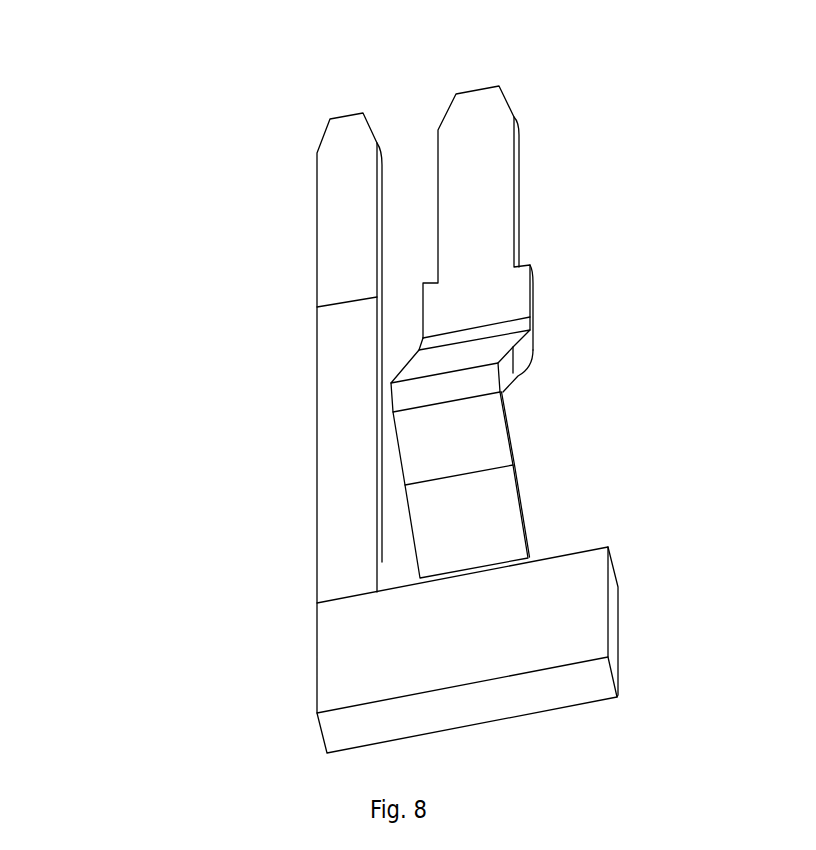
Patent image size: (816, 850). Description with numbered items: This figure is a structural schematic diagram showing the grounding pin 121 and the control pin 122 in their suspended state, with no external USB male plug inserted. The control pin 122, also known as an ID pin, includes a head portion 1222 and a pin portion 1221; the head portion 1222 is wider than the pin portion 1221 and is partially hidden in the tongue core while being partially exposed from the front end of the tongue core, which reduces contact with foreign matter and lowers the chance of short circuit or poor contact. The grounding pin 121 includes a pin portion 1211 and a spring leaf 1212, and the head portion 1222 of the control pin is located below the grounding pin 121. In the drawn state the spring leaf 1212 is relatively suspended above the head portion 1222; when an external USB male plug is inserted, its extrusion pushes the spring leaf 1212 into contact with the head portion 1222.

The grounding pin 121 is at (564, 328).
The pin portion of the grounding pin 1211 is at (515, 190).
The spring leaf 1212 is at (500, 390).
The control pin 122 is at (324, 433).
The pin portion of the control pin 1221 is at (317, 380).
The head portion of the control pin 1222 is at (317, 658).